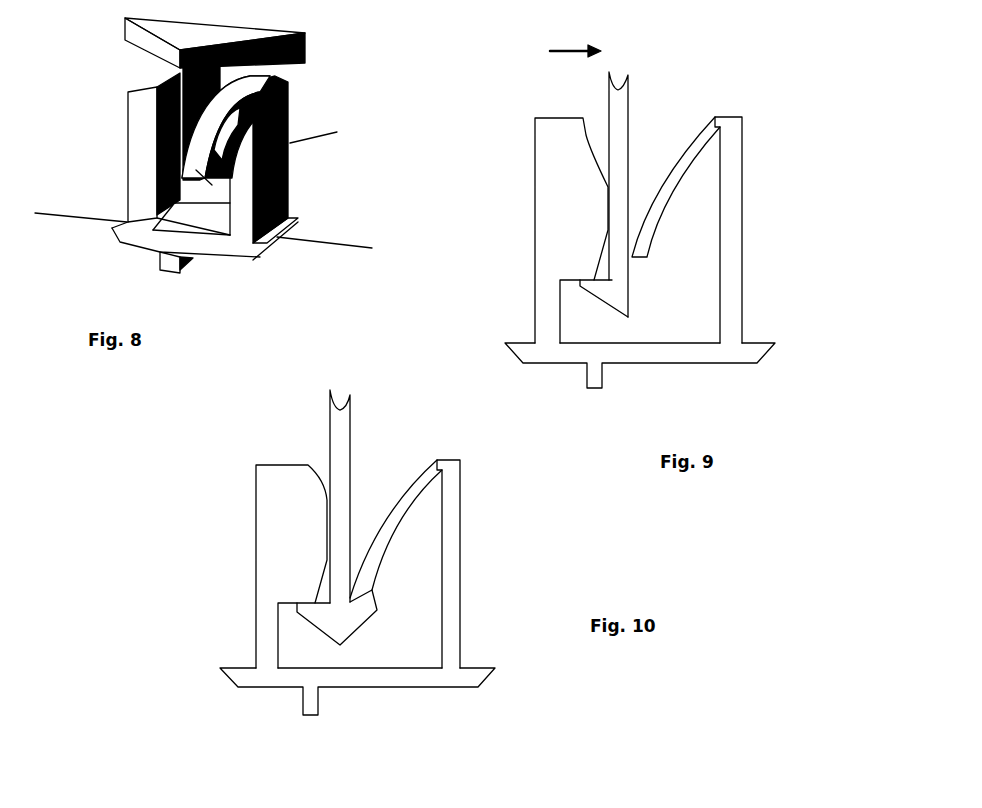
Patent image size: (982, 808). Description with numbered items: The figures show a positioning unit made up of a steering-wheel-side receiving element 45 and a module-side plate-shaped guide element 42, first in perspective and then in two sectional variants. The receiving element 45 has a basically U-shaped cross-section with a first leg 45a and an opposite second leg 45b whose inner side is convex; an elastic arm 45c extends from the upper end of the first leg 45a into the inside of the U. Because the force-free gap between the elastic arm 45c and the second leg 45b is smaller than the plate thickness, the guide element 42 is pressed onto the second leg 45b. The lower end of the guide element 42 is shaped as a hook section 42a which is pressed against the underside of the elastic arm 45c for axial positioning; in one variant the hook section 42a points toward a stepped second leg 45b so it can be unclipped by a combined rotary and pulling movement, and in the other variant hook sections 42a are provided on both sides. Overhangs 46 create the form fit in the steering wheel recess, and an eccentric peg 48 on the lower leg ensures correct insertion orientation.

In FIG. 8, the plate-shaped guide element 42 is at (223, 98).
In FIG. 9, the plate-shaped guide element 42 is at (623, 115).
In FIG. 10, the plate-shaped guide element 42 is at (343, 422).
In FIG. 8, the hook section 42a is at (198, 185).
In FIG. 9, the hook section 42a is at (597, 288).
In FIG. 10, the hook section 42a is at (310, 612).
In FIG. 8, the receiving element 45 is at (243, 238).
In FIG. 9, the receiving element 45 is at (722, 357).
In FIG. 10, the receiving element 45 is at (457, 680).
In FIG. 8, the first leg 45a is at (287, 172).
In FIG. 9, the first leg 45a is at (735, 243).
In FIG. 10, the first leg 45a is at (453, 547).
In FIG. 8, the second leg 45b is at (152, 162).
In FIG. 9, the second leg 45b is at (553, 240).
In FIG. 10, the second leg 45b is at (272, 548).
In FIG. 8, the elastic arm 45c is at (277, 228).
In FIG. 9, the elastic arm 45c is at (668, 187).
In FIG. 10, the elastic arm 45c is at (403, 512).
In FIG. 8, the overhangs 46 is at (120, 237).
In FIG. 8, the peg 48 is at (167, 268).